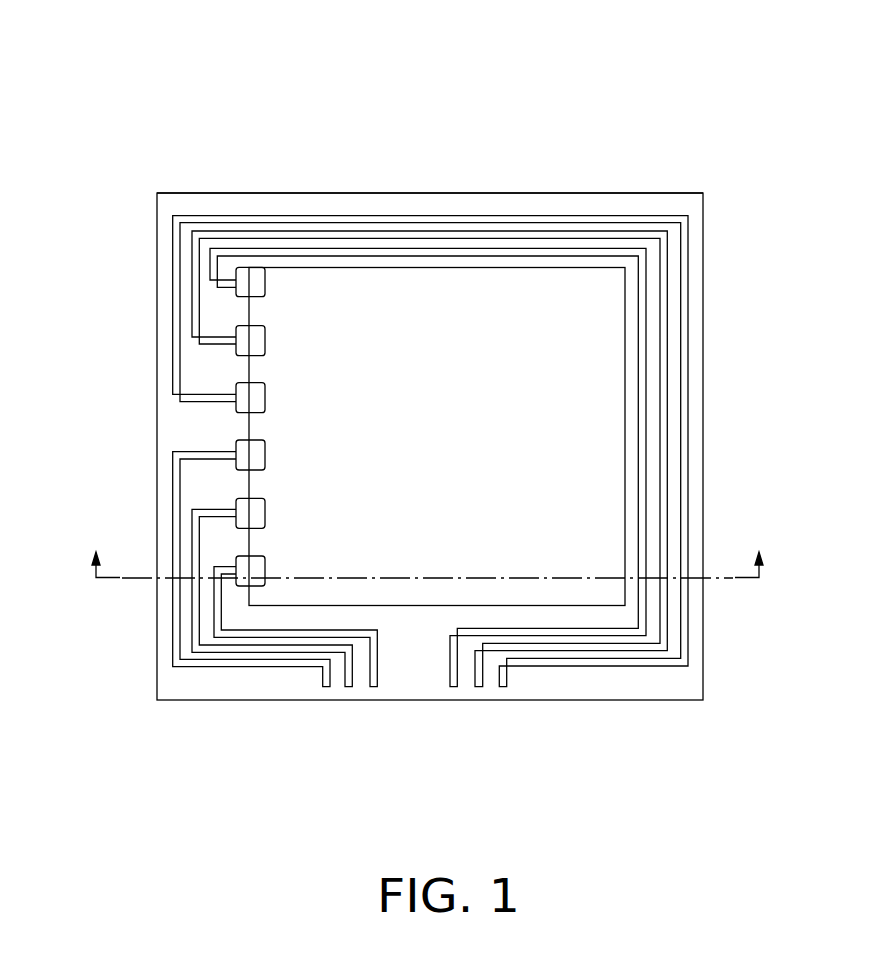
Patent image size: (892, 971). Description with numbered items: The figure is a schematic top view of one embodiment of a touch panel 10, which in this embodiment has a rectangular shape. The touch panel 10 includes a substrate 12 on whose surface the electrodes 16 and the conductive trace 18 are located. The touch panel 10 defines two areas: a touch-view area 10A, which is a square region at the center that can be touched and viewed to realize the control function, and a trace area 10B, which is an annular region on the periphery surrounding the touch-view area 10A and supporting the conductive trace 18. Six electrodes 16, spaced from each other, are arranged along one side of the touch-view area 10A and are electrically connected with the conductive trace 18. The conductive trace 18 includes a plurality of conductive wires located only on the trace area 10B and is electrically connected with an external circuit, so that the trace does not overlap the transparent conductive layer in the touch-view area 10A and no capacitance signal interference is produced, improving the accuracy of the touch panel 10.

The touch panel 10 is at (408, 42).
The touch-view area 10A is at (553, 408).
The trace area 10B is at (470, 206).
The substrate 12 is at (703, 221).
The electrode 16 is at (247, 288).
The conductive trace 18 is at (171, 471).